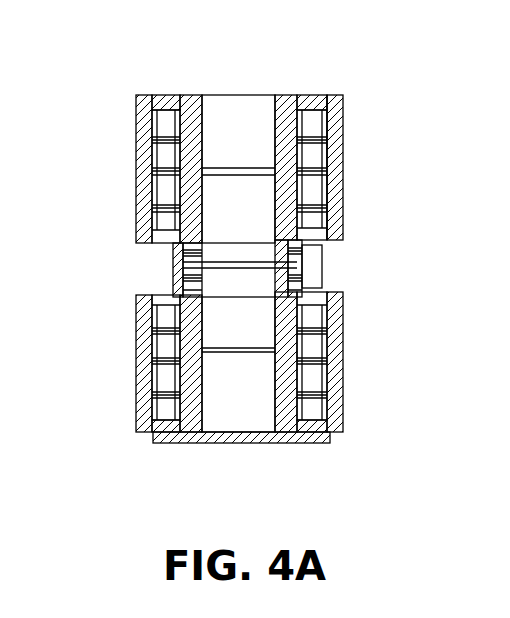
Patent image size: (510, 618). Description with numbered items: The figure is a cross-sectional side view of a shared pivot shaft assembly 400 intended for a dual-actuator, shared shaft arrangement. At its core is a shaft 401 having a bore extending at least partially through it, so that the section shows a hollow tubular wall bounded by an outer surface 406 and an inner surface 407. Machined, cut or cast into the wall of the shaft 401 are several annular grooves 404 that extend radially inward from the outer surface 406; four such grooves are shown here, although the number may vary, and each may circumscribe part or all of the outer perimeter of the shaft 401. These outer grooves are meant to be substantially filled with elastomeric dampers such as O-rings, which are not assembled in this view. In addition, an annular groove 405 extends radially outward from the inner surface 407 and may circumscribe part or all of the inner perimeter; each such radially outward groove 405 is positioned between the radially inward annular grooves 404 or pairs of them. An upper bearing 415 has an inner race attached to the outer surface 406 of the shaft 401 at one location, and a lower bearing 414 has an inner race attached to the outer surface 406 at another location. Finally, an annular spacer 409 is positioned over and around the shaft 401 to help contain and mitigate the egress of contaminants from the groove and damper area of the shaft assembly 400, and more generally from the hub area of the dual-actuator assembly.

The pivot shaft assembly 400 is at (249, 252).
The shaft 401 is at (188, 96).
The upper bearing 415 is at (150, 96).
The outer surface 406 is at (332, 123).
The annular groove 405 is at (272, 262).
The annular spacer 409 is at (173, 262).
The annular groove 404 is at (324, 266).
The inner surface 407 is at (272, 342).
The lower bearing 414 is at (300, 437).